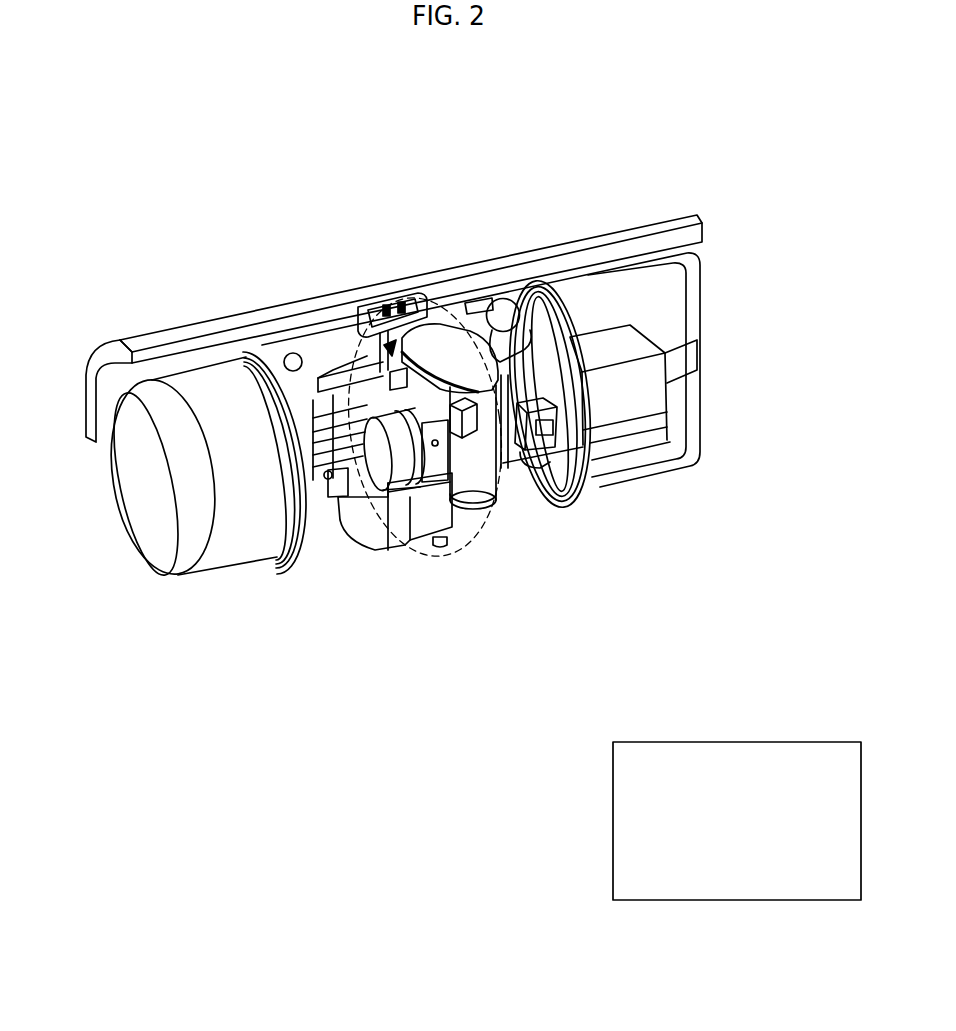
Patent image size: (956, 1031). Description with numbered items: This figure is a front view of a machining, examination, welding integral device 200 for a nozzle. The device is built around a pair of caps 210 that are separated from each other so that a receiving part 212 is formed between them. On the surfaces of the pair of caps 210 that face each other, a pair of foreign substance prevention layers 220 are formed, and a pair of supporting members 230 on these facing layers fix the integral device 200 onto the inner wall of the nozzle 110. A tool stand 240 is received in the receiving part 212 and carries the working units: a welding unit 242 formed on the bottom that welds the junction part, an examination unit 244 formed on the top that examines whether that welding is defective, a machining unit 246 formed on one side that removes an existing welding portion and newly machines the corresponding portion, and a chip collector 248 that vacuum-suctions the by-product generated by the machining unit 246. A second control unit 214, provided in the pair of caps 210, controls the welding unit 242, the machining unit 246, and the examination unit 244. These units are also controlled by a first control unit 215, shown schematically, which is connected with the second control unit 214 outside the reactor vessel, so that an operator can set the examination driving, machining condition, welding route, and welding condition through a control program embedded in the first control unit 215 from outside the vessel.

The nozzle 110 is at (700, 232).
The machining, examination, welding integral device 200 is at (472, 95).
The caps 210 is at (690, 465).
The receiving part 212 is at (340, 352).
The second control unit 214 is at (627, 413).
The first control unit 215 is at (737, 821).
The foreign substance prevention layers 220 is at (298, 560).
The supporting members 230 is at (322, 385).
The tool stand 240 is at (465, 552).
The welding unit 242 is at (440, 550).
The examination unit 244 is at (397, 307).
The machining unit 246 is at (366, 484).
The chip collector 248 is at (447, 519).